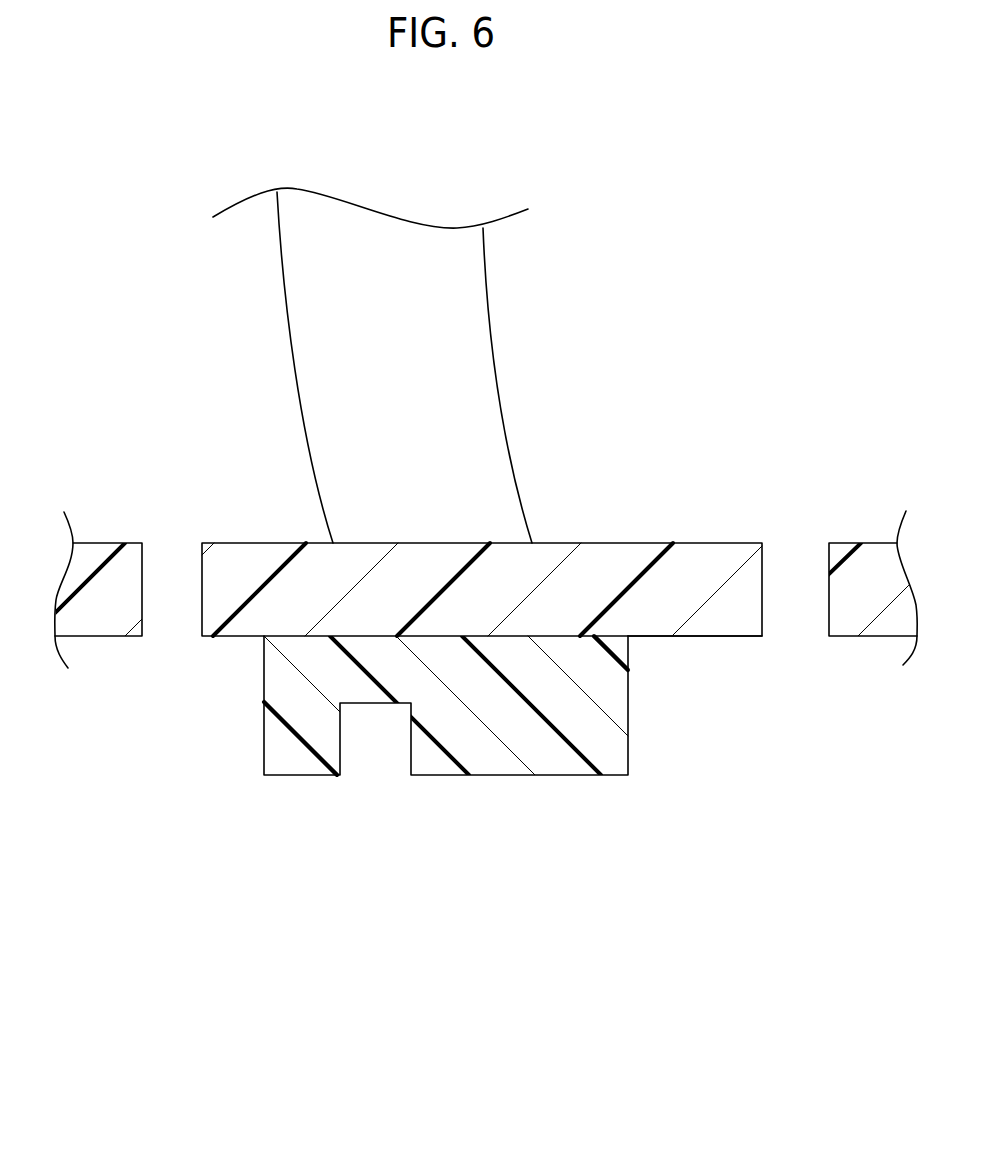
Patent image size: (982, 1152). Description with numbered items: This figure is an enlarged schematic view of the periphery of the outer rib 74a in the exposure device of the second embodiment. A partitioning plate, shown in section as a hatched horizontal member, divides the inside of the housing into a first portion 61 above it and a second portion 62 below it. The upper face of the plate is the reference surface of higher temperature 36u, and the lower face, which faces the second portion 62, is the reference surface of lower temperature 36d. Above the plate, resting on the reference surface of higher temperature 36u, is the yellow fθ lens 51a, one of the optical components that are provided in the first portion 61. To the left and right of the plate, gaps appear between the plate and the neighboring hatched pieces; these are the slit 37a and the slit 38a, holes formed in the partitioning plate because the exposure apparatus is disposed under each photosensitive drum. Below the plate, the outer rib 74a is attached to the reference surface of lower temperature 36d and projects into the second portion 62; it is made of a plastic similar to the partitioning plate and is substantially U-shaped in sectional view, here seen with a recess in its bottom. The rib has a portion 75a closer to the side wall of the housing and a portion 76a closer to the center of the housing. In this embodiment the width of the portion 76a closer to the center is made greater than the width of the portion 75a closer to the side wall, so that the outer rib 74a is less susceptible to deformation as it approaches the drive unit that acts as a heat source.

The yellow fθ lens 51a is at (380, 228).
The reference surface of higher temperature 36u is at (260, 543).
The reference surface of lower temperature 36d is at (708, 637).
The slit 37a is at (143, 577).
The slit 38a is at (829, 577).
The outer rib 74a is at (452, 793).
The portion closer to the side wall 75a is at (277, 752).
The portion closer to the center of the housing 76a is at (613, 748).
The first portion 61 is at (777, 359).
The second portion 62 is at (810, 845).